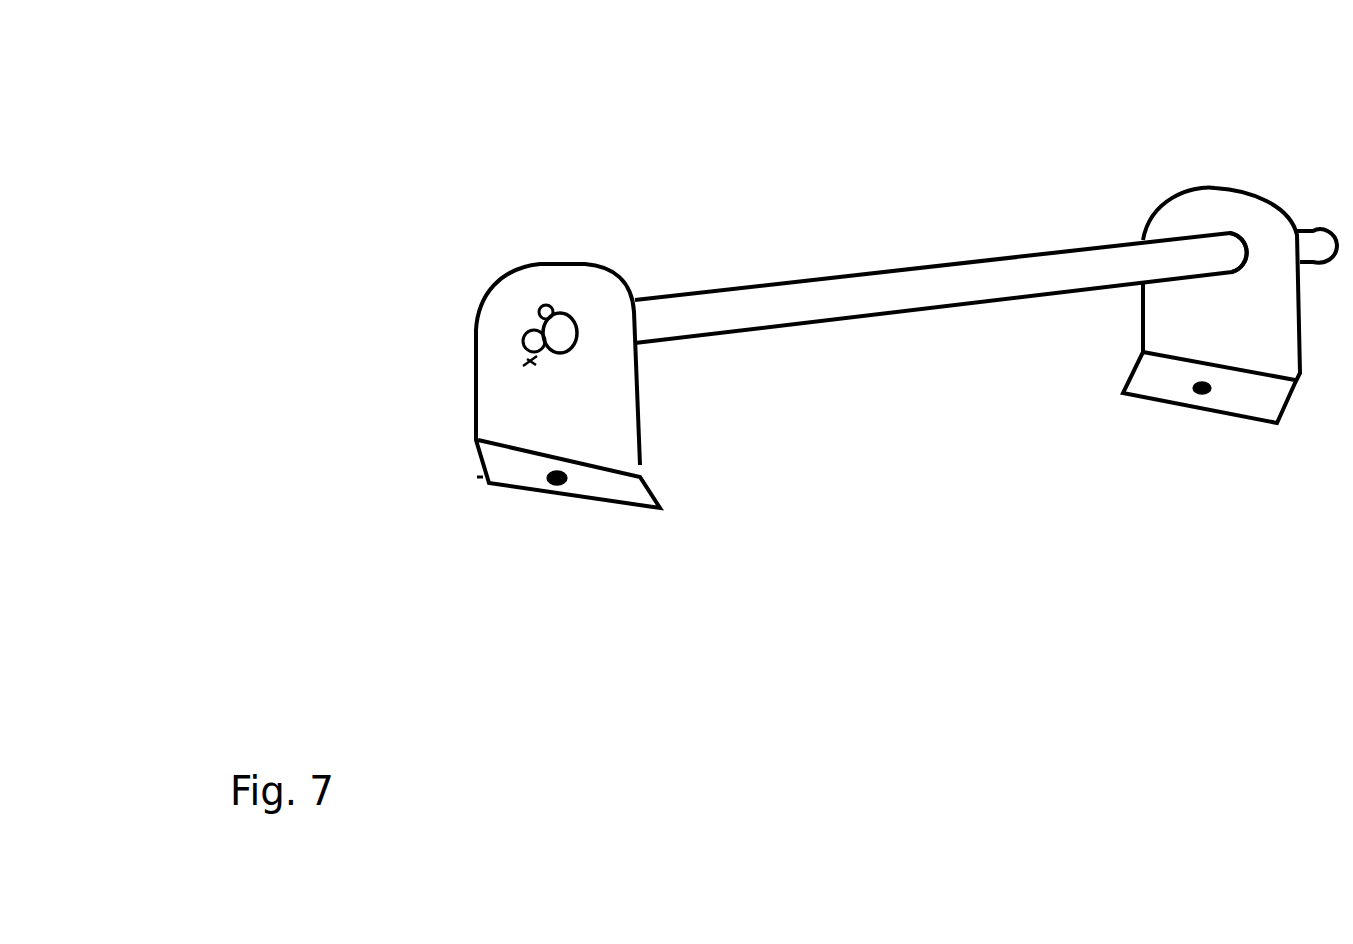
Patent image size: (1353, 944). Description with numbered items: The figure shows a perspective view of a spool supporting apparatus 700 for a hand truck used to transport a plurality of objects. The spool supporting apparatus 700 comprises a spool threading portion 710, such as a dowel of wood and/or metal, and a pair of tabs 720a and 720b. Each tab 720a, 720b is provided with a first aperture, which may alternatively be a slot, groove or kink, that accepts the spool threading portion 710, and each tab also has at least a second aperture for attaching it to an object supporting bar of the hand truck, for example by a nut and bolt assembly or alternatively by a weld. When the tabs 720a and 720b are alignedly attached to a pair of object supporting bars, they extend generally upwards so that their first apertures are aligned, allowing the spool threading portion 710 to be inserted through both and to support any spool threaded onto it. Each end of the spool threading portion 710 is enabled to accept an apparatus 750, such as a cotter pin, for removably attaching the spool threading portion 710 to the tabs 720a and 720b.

The spool supporting apparatus 700 is at (398, 96).
The spool threading portion 710 is at (820, 298).
The tab 720a is at (568, 386).
The tab 720b is at (1230, 305).
The apparatus for removably attaching 750 is at (548, 312).